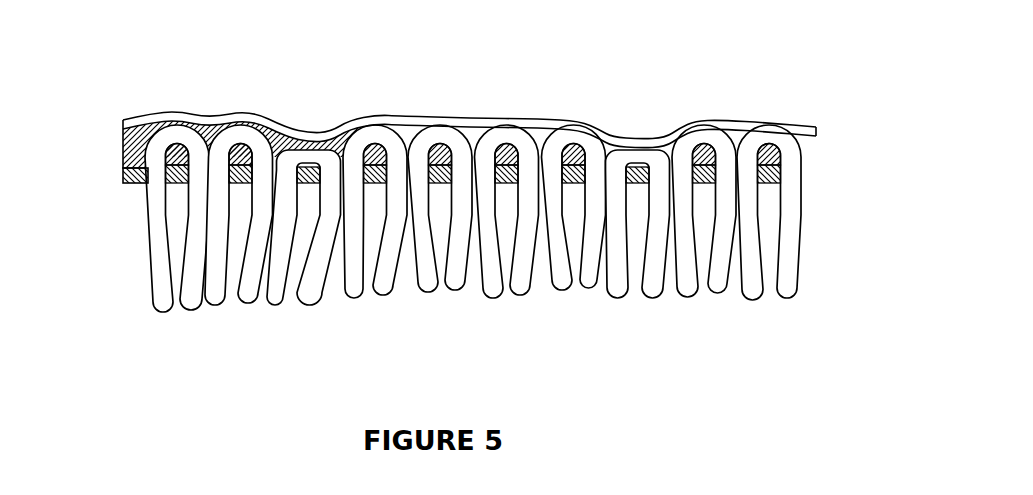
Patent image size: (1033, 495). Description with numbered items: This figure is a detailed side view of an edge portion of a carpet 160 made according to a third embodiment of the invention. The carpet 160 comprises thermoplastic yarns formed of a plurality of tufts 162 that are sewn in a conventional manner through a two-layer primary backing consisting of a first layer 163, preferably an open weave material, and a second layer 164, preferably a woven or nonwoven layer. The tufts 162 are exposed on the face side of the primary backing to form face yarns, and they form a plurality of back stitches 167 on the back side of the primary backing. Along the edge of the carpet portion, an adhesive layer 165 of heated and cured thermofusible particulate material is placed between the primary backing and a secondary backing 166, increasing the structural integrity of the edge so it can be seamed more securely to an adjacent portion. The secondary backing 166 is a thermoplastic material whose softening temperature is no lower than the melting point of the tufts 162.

The carpet 160 is at (630, 54).
The tufts 162 is at (807, 253).
The first layer 163 is at (795, 148).
The second layer 164 is at (133, 196).
The adhesive layer 165 is at (115, 136).
The secondary backing 166 is at (777, 110).
The back stitches 167 is at (255, 140).